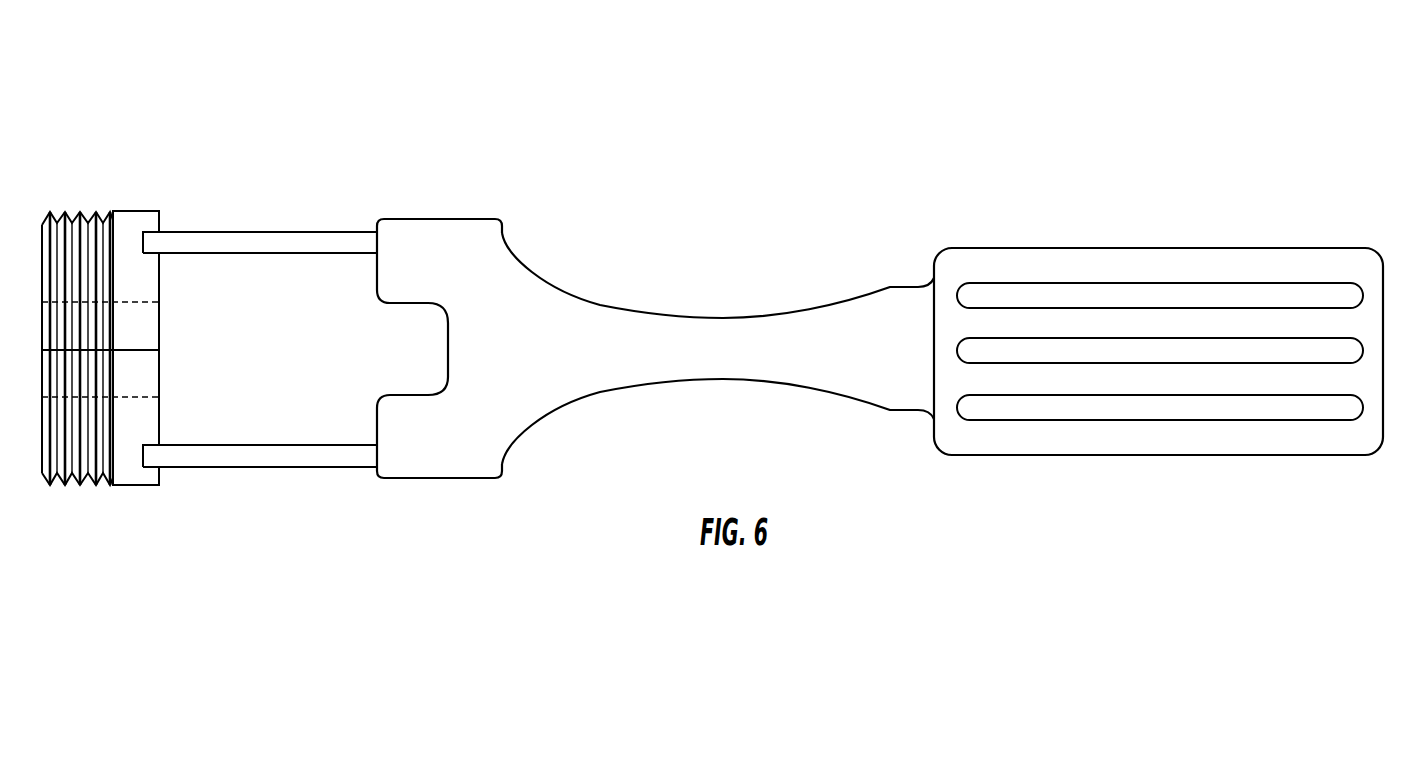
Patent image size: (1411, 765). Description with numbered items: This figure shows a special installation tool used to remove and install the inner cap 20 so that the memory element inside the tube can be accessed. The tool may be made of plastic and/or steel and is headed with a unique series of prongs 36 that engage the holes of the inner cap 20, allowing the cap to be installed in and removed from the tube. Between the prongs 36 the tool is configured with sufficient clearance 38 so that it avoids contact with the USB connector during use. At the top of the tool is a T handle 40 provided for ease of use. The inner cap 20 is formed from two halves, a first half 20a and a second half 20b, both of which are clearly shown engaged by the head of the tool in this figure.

The inner cap 20 is at (125, 98).
The first half of inner cap 20a is at (142, 211).
The second half of inner cap 20b is at (140, 476).
The prongs 36 is at (312, 242).
The clearance 38 is at (287, 351).
The T handle 40 is at (1130, 258).